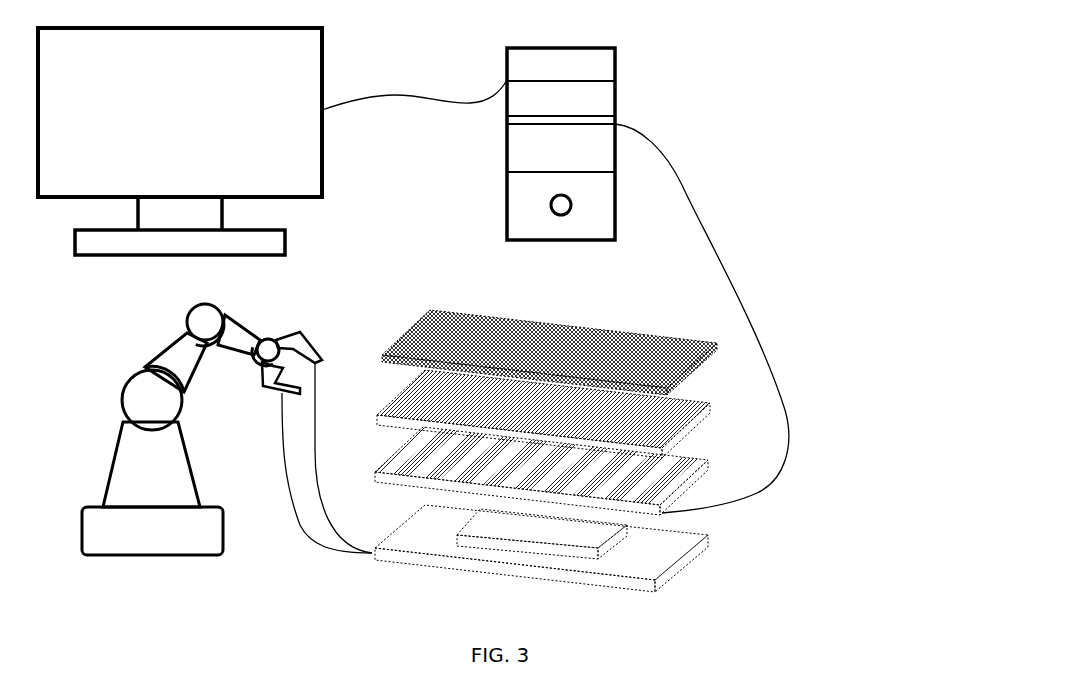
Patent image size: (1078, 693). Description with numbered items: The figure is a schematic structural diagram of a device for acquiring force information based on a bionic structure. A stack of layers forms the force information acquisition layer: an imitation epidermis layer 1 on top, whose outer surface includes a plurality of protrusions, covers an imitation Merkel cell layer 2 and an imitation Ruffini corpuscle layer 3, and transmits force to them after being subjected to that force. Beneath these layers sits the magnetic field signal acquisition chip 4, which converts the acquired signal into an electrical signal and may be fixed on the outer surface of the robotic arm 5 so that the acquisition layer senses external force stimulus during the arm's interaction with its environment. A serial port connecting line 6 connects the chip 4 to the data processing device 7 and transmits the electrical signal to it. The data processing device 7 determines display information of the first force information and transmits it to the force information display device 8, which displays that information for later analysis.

The imitation epidermis layer 1 is at (703, 364).
The imitation Merkel cell layer 2 is at (701, 432).
The imitation Ruffini corpuscle layer 3 is at (689, 500).
The magnetic field signal acquisition chip 4 is at (650, 586).
The robotic arm 5 is at (318, 340).
The serial port connecting line 6 is at (682, 185).
The data processing device 7 is at (613, 100).
The force information display device 8 is at (324, 77).